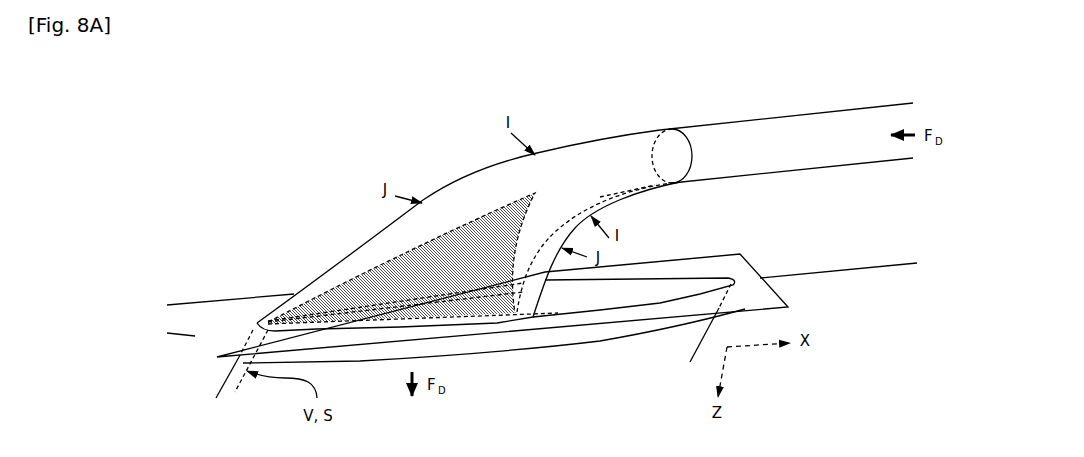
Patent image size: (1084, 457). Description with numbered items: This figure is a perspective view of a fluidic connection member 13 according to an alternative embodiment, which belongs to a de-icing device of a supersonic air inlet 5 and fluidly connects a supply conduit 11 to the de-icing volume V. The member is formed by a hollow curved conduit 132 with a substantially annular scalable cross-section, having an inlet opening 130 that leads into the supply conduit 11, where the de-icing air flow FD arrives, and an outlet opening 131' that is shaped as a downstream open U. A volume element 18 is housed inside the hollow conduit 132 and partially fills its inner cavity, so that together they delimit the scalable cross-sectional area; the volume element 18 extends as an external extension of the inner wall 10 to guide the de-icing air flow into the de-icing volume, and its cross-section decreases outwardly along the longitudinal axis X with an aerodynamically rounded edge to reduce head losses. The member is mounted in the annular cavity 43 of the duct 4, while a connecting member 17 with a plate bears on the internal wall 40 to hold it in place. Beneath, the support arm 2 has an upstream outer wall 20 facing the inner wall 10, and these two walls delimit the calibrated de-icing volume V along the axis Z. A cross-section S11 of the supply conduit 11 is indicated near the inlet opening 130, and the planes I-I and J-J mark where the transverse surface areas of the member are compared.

The supply conduit 11 is at (800, 114).
The inlet opening 130 is at (663, 130).
The cross section of tube S11 is at (672, 156).
The fluidic connection member 13 is at (468, 210).
The hollow conduit 132 is at (316, 278).
The volume element 18 is at (373, 261).
The outlet opening 131' is at (496, 334).
The supersonic air inlet 5 is at (417, 340).
The duct 4 is at (435, 295).
The connecting member 17 is at (200, 291).
The support arm 2 is at (414, 365).
The upstream outer wall 20 is at (216, 399).
The inner wall 10 is at (235, 393).
The annular cavity 43 is at (838, 271).
The internal wall 40 is at (888, 268).